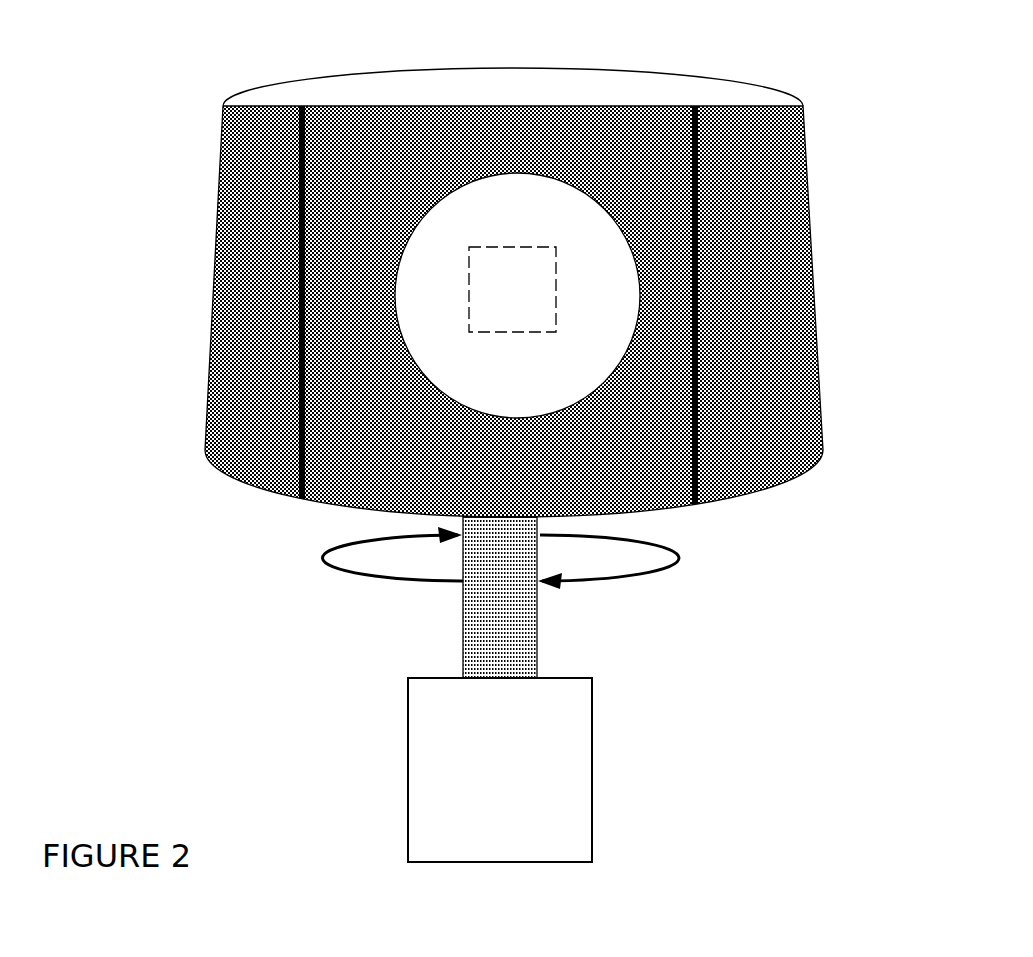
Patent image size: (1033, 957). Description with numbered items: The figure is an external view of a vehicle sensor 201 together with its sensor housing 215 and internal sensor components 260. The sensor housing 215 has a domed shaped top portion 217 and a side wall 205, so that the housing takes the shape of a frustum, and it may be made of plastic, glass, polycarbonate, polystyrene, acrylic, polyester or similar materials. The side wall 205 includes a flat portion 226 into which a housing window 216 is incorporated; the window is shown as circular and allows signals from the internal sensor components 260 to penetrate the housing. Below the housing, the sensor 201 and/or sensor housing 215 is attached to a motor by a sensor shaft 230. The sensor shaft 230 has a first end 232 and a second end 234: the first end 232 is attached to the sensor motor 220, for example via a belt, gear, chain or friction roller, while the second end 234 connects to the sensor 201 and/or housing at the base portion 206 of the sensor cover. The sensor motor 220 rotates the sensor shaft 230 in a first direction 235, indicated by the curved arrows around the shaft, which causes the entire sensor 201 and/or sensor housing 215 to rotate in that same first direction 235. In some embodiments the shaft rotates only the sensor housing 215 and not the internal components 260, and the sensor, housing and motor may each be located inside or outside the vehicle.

The sensor 201 is at (482, 441).
The domed shaped top portion 217 is at (336, 75).
The side wall 205 is at (222, 129).
The sensor housing 215 is at (250, 199).
The housing window 216 is at (400, 333).
The flat portion 226 is at (386, 437).
The base portion 206 is at (268, 494).
The internal sensor components 260 is at (469, 265).
The second end of the sensor shaft 234 is at (498, 522).
The first direction 235 is at (362, 559).
The sensor shaft 230 is at (480, 610).
The first end of the sensor shaft 232 is at (480, 665).
The sensor motor 220 is at (408, 757).